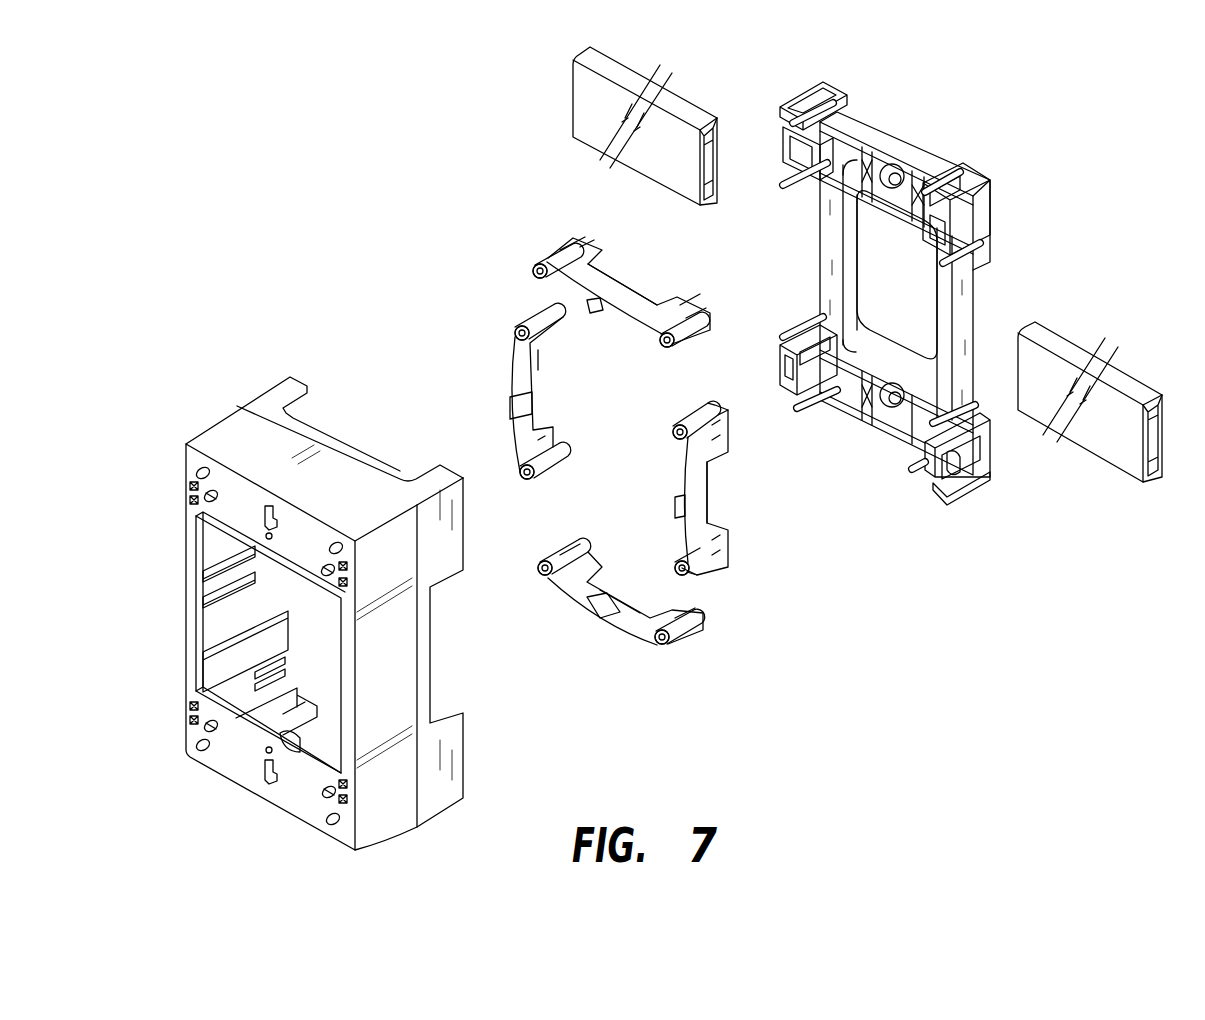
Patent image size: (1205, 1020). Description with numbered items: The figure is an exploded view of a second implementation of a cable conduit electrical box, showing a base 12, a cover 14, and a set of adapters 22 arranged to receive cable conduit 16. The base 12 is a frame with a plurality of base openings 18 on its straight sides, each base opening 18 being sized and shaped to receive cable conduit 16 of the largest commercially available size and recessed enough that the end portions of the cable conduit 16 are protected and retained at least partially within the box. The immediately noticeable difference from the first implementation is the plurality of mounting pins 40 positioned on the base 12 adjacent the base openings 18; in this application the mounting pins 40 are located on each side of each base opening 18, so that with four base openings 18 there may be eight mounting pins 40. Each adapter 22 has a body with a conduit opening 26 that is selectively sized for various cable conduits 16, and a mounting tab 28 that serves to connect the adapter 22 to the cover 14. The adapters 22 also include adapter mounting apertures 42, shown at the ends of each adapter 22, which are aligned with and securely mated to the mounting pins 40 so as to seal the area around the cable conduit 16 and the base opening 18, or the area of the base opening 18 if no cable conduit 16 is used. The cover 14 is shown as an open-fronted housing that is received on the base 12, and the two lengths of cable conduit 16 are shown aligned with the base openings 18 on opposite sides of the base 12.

The base 12 is at (997, 197).
The cover 14 is at (237, 403).
The cable conduit 16 is at (683, 100).
The base openings 18 is at (920, 142).
The adapters 22 is at (572, 233).
The conduit openings 26 is at (600, 277).
The mounting tab 28 is at (588, 303).
The mounting pins 40 is at (840, 103).
The adapter mounting apertures 42 is at (537, 265).